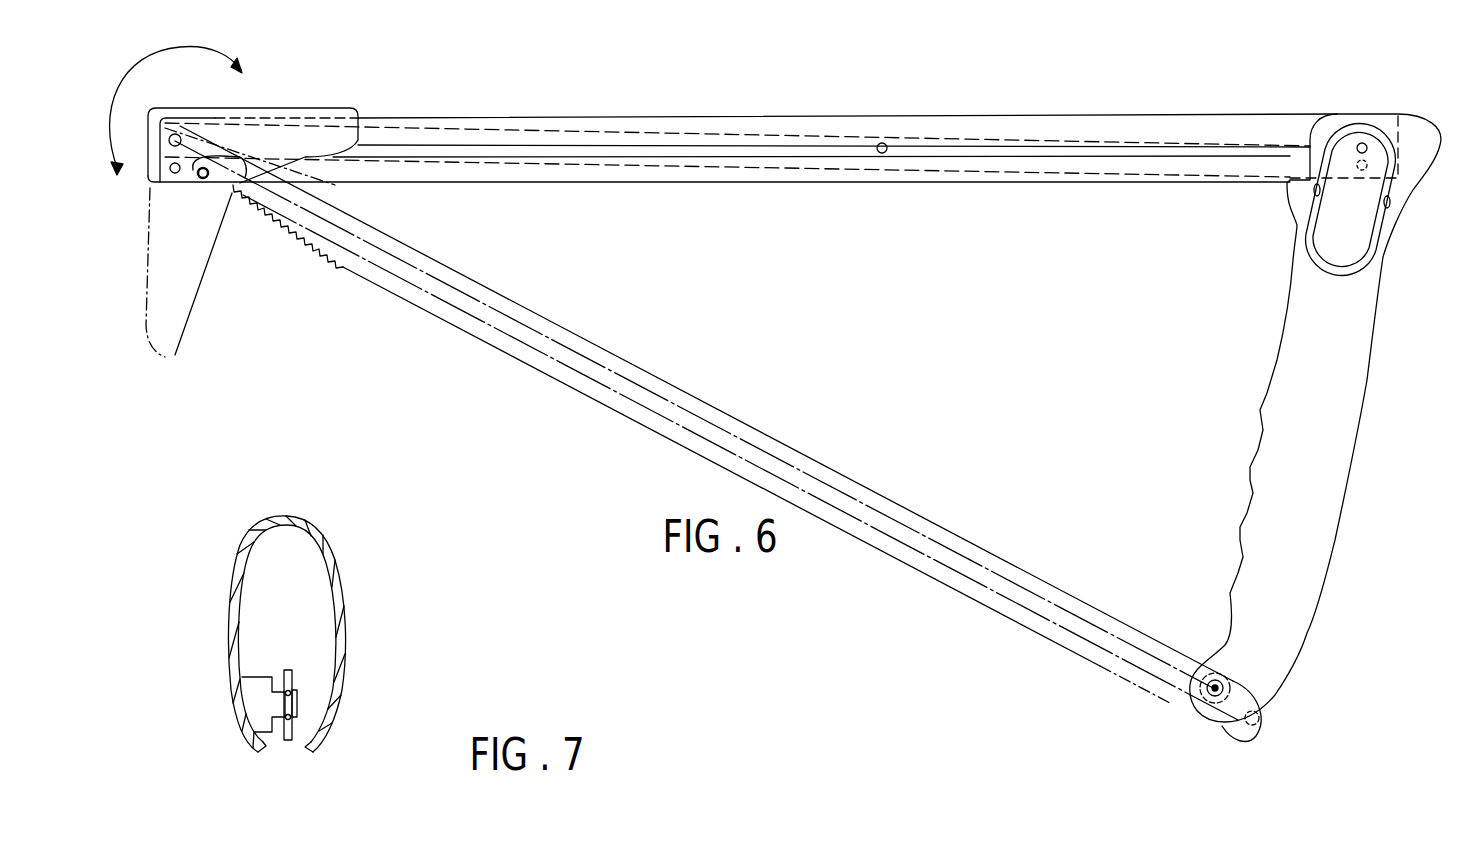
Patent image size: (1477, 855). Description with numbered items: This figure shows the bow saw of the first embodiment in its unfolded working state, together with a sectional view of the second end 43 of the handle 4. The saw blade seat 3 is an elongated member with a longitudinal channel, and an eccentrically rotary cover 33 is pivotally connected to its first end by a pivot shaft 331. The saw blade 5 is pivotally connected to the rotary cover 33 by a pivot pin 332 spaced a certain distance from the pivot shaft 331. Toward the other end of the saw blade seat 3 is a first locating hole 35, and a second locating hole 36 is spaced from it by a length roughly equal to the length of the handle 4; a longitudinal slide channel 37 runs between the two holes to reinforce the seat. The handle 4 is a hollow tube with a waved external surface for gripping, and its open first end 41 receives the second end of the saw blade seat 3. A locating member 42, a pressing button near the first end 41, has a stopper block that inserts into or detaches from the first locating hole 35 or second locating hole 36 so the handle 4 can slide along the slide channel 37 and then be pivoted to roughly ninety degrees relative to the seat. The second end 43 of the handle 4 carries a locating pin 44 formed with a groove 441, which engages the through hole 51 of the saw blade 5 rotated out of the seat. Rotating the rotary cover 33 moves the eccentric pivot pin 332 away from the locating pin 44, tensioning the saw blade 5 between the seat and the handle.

In FIG. 6, the saw blade seat 3 is at (980, 125).
In FIG. 6, the rotary cover 33 is at (285, 110).
In FIG. 6, the pivot shaft 331 is at (177, 174).
In FIG. 6, the pivot pin 332 is at (176, 134).
In FIG. 6, the first locating hole 35 is at (1361, 143).
In FIG. 6, the second locating hole 36 is at (882, 143).
In FIG. 6, the slide channel 37 is at (707, 145).
In FIG. 6, the handle 4 is at (1353, 352).
In FIG. 7, the handle 4 is at (347, 600).
In FIG. 6, the first end of the handle 41 is at (1427, 130).
In FIG. 6, the locating member 42 is at (1350, 243).
In FIG. 6, the second end of the handle 43 is at (1250, 718).
In FIG. 7, the locating pin 44 is at (255, 702).
In FIG. 7, the groove 441 is at (292, 720).
In FIG. 6, the saw blade 5 is at (806, 165).
In FIG. 7, the saw blade 5 is at (288, 742).
In FIG. 7, the through hole 51 is at (293, 702).